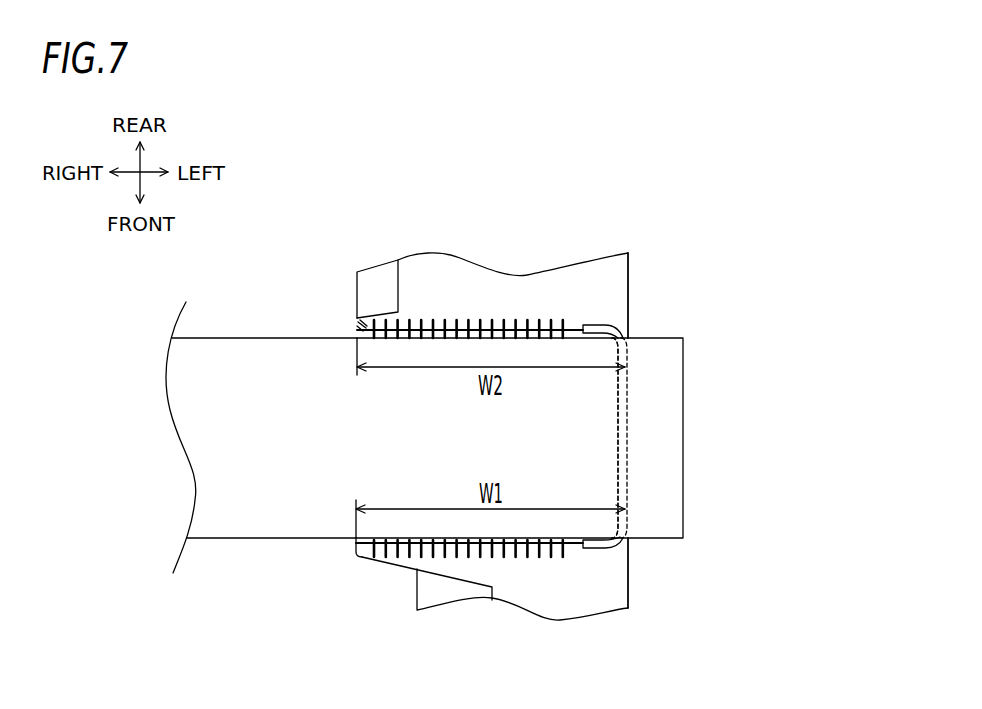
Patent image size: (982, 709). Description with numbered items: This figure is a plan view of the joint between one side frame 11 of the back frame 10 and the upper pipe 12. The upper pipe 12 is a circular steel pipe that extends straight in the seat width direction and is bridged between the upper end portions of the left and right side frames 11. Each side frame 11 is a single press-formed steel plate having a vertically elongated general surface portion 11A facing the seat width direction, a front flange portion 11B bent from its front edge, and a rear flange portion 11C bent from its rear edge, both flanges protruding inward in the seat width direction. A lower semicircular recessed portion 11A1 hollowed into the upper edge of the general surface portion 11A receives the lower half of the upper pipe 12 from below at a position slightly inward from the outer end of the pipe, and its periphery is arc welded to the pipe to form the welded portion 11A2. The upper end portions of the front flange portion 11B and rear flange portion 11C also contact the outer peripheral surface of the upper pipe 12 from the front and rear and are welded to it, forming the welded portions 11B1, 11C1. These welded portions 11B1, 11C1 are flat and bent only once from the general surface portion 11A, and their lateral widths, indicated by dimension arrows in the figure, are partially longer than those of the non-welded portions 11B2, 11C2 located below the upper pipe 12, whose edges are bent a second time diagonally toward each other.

The back frame 10 is at (632, 182).
The side frame 11 is at (598, 323).
The general surface portion 11A is at (627, 463).
The recessed portion 11A1 is at (620, 413).
The welded portion 11A2 is at (615, 438).
The front flange portion 11B is at (362, 553).
The welded portion 11B1 is at (405, 545).
The non-welded portion 11B2 is at (541, 597).
The rear flange portion 11C is at (360, 328).
The welded portion 11C1 is at (452, 335).
The non-welded portion 11C2 is at (527, 297).
The upper pipe 12 is at (230, 357).